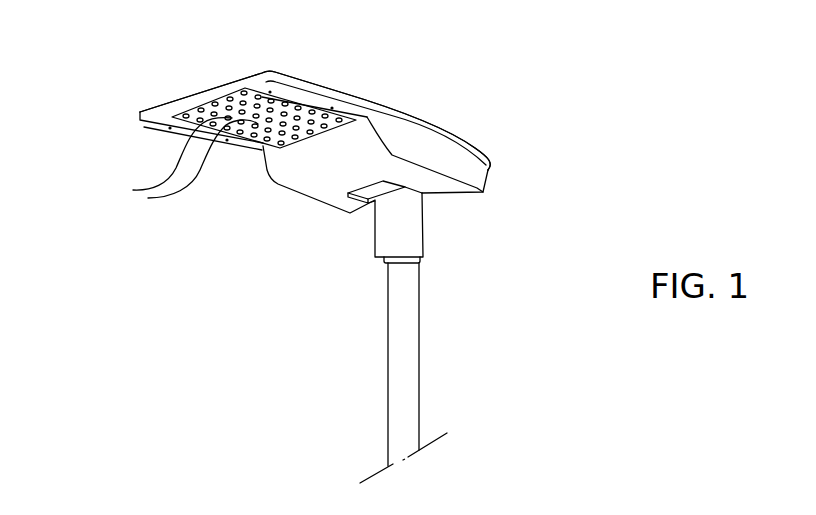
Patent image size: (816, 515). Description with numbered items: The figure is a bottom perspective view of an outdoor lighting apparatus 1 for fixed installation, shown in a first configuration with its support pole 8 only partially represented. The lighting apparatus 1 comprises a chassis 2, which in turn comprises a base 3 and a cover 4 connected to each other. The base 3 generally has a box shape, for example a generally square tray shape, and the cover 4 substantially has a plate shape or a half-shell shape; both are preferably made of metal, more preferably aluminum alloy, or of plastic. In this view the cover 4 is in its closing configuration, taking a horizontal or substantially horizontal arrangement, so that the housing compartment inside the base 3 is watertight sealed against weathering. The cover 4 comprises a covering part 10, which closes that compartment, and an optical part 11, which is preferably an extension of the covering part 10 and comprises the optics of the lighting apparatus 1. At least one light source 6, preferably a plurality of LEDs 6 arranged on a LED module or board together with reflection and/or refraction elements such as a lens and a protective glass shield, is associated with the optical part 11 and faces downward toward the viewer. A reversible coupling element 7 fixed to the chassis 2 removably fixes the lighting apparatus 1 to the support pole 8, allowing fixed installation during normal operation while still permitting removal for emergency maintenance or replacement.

The outdoor lighting apparatus 1 is at (86, 80).
The chassis 2 is at (500, 156).
The base 3 is at (470, 172).
The cover 4 is at (406, 104).
The light source 6 is at (133, 191).
The reversible coupling element 7 is at (407, 232).
The support pole 8 is at (402, 412).
The covering part 10 is at (448, 130).
The optical part 11 is at (303, 88).